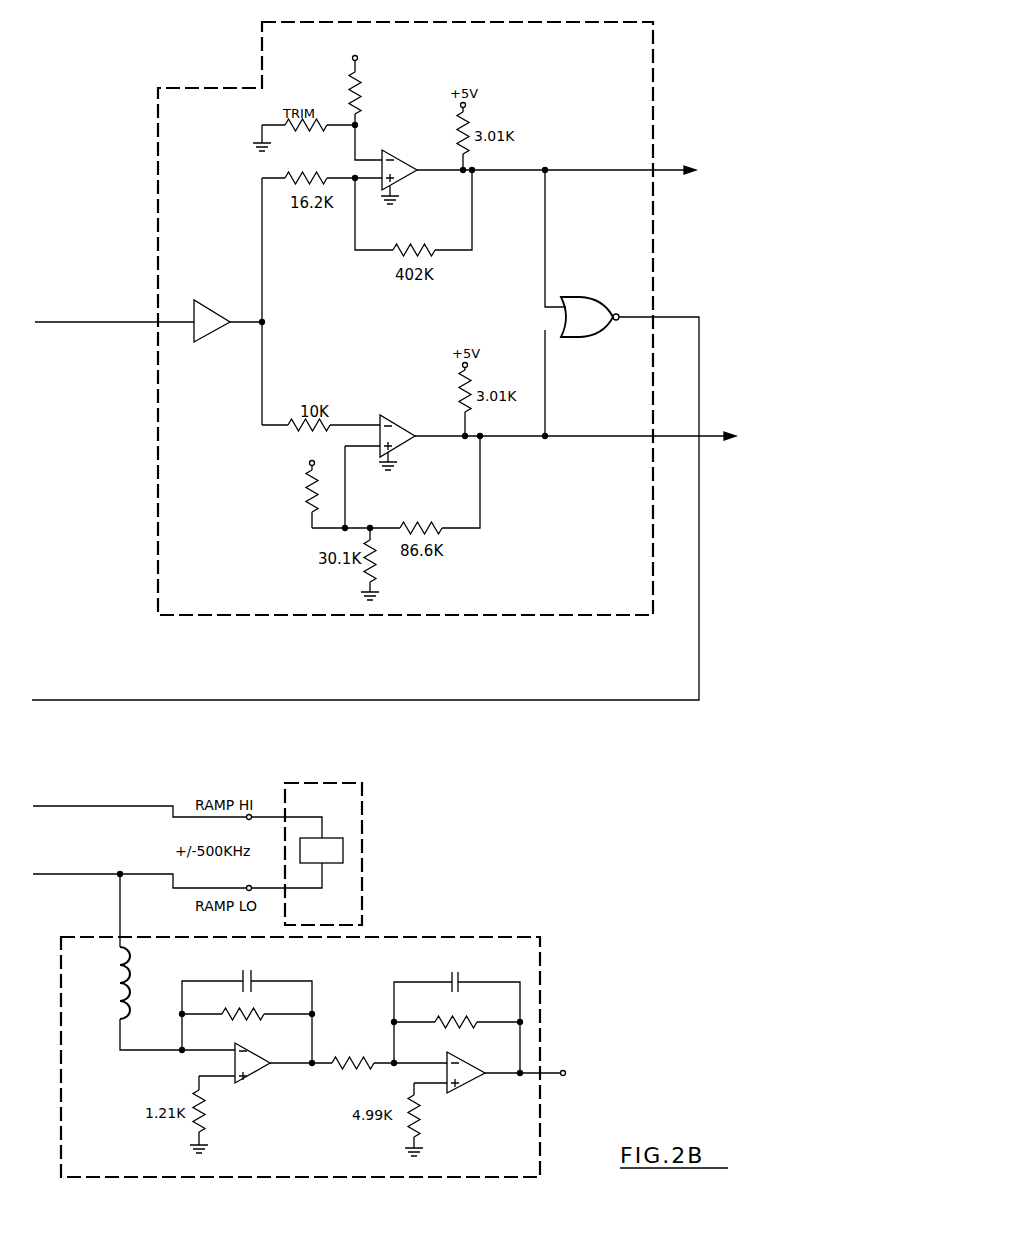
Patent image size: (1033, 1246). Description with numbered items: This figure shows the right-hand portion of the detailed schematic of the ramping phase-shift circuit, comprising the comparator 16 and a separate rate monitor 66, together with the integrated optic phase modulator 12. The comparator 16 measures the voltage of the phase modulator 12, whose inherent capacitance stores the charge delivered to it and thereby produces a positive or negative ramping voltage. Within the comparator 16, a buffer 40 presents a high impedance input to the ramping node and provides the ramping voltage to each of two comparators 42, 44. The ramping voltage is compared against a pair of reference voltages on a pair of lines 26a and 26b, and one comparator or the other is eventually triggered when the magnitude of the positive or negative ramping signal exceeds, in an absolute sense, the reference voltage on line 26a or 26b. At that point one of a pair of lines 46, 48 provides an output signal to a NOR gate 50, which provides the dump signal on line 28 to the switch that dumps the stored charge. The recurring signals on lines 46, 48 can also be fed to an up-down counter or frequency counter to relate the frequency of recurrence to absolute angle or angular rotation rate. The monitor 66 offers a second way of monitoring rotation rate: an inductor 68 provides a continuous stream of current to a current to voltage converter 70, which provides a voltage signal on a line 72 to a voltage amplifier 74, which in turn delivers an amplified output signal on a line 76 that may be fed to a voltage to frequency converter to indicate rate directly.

The comparator 16 is at (157, 194).
The line 26a is at (362, 77).
The line 26b is at (305, 493).
The buffer 40 is at (207, 300).
The comparator 42 is at (401, 180).
The comparator 44 is at (404, 449).
The line 46 is at (575, 170).
The line 48 is at (575, 438).
The NOR gate 50 is at (581, 338).
The line 28 is at (668, 317).
The integrated optic phase modulator 12 is at (362, 812).
The monitor 66 is at (440, 938).
The inductor 68 is at (135, 981).
The current to voltage converter 70 is at (250, 1083).
The line 72 is at (330, 1066).
The voltage amplifier 74 is at (458, 1088).
The line 76 is at (556, 1075).